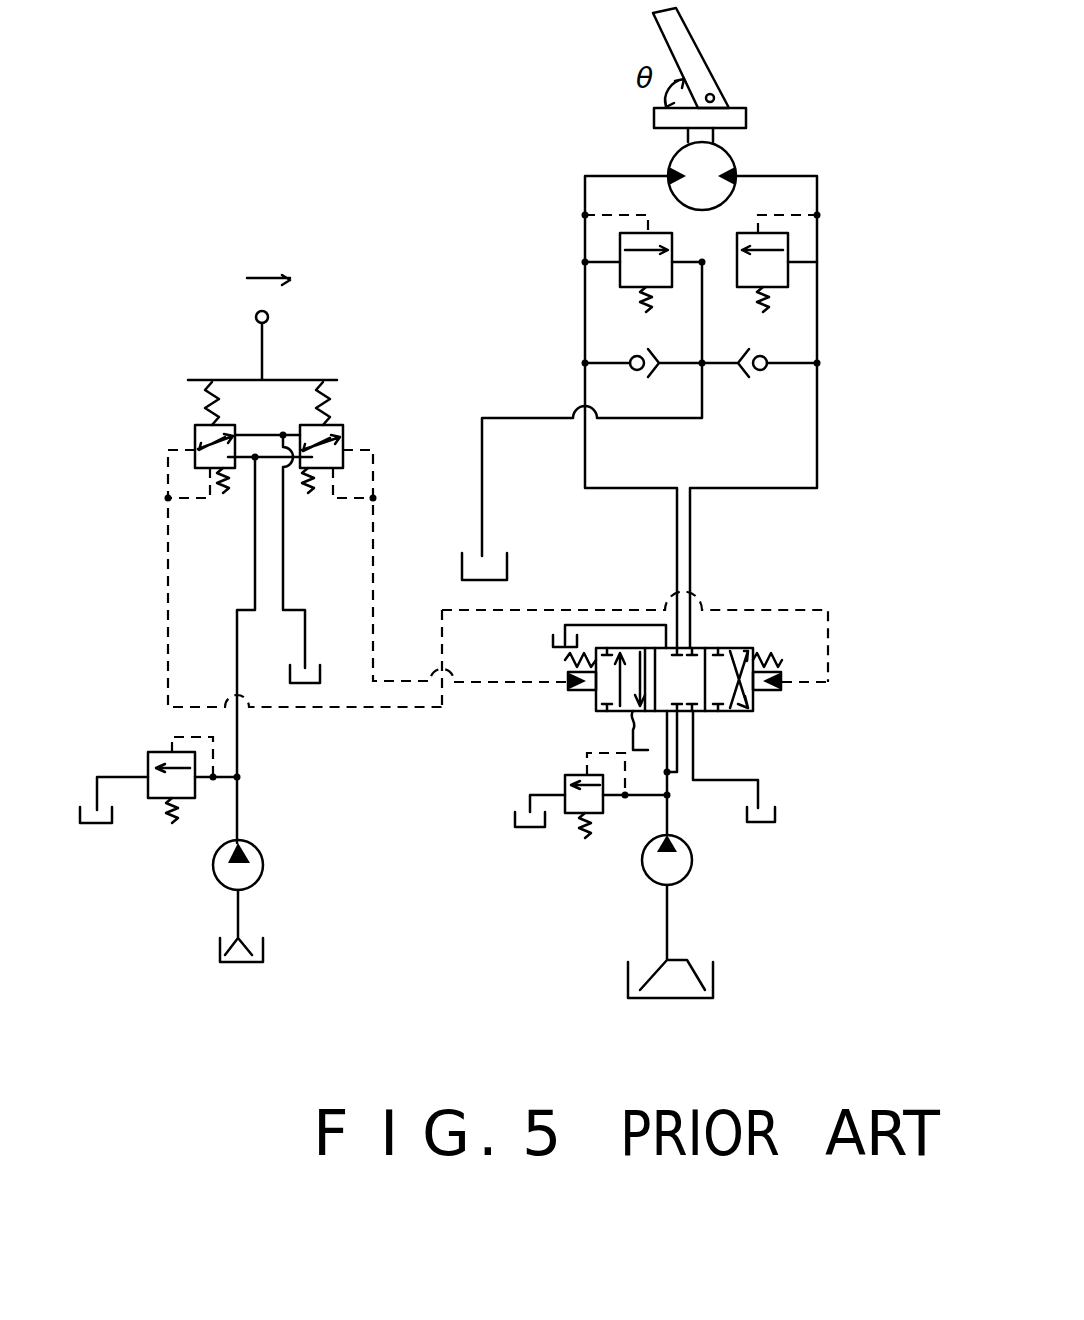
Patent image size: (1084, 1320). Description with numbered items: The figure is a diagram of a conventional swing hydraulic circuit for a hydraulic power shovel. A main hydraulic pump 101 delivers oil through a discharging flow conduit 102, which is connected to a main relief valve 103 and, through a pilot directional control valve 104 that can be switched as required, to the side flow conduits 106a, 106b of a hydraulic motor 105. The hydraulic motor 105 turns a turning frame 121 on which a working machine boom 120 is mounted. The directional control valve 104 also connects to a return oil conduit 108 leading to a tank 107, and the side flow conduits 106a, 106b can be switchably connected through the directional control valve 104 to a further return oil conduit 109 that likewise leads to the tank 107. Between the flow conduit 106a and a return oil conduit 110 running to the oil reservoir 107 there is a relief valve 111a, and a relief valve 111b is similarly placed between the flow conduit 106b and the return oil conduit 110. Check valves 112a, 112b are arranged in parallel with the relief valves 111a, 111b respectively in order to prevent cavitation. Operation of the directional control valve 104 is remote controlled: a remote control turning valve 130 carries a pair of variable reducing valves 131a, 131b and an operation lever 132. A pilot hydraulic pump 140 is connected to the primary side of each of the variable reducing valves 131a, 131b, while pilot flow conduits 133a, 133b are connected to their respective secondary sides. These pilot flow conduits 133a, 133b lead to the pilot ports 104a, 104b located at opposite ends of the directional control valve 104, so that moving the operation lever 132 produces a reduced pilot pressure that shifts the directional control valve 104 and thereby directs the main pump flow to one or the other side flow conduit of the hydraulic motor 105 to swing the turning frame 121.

The working machine boom 120 is at (697, 52).
The turning frame 121 is at (746, 114).
The hydraulic motor 105 is at (736, 158).
The side flow conduit 106a is at (623, 176).
The side flow conduit 106b is at (818, 214).
The relief valve 111a is at (618, 244).
The relief valve 111b is at (790, 250).
The check valve 112a is at (632, 357).
The check valve 112b is at (768, 358).
The return oil conduit 110 is at (523, 417).
The tank 107 is at (507, 560).
The return oil conduit 108 is at (610, 625).
The pilot directional control valve 104 is at (755, 706).
The pilot port 104a is at (567, 686).
The pilot port 104b is at (784, 676).
The return oil conduit 109 is at (760, 793).
The main relief valve 103 is at (570, 817).
The discharging flow conduit 102 is at (672, 825).
The main hydraulic pump 101 is at (688, 878).
The remote control turning valve 130 is at (149, 317).
The variable reducing valve 131a is at (345, 431).
The variable reducing valve 131b is at (193, 432).
The operation lever 132 is at (263, 353).
The pilot flow conduit 133a is at (373, 557).
The pilot flow conduit 133b is at (168, 603).
The pilot hydraulic pump 140 is at (263, 863).